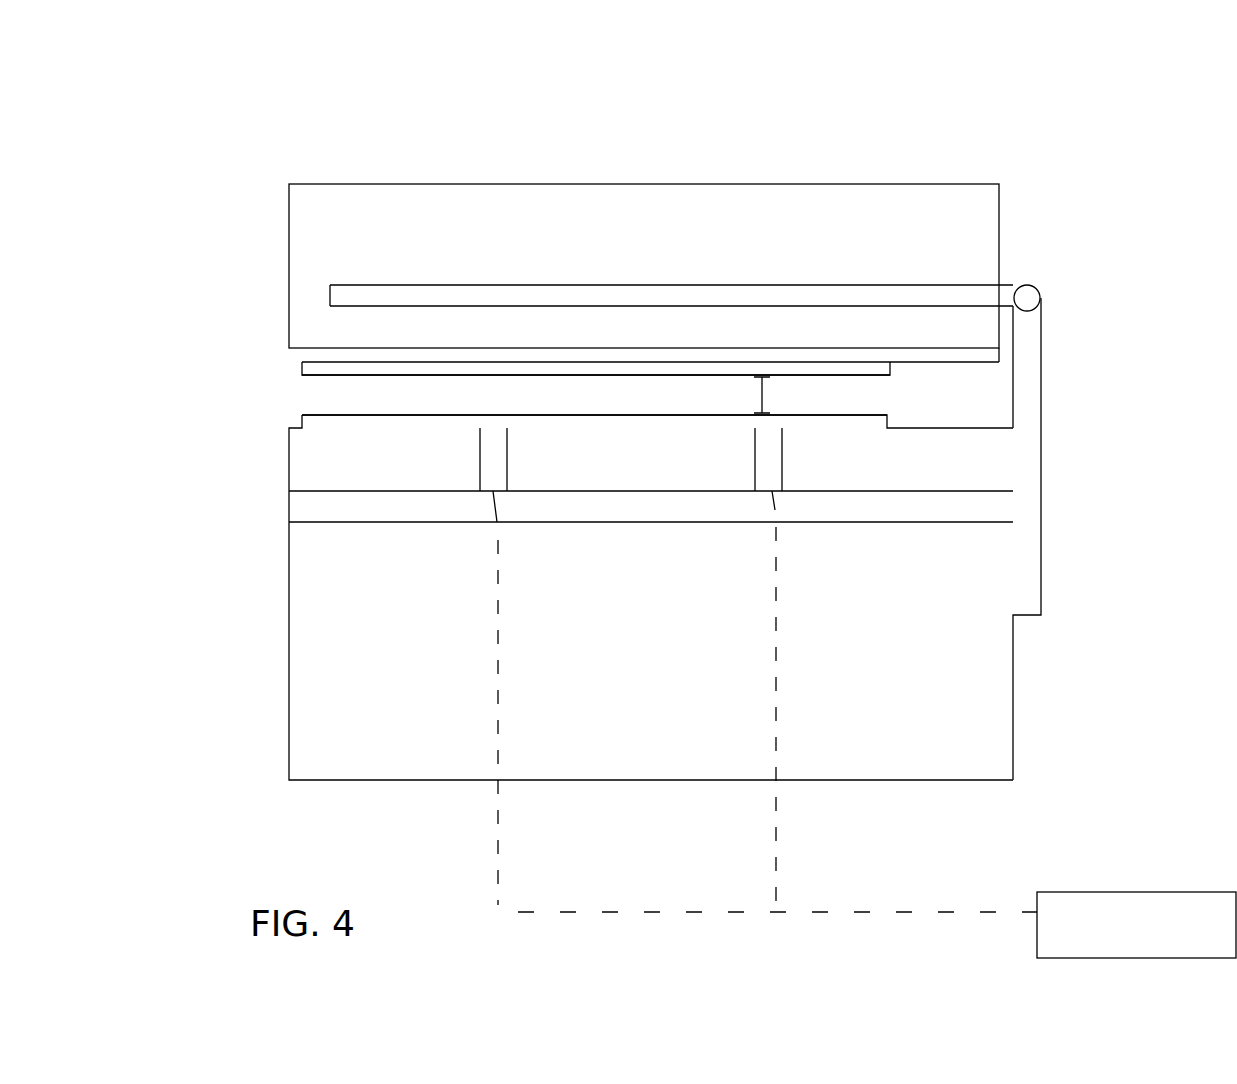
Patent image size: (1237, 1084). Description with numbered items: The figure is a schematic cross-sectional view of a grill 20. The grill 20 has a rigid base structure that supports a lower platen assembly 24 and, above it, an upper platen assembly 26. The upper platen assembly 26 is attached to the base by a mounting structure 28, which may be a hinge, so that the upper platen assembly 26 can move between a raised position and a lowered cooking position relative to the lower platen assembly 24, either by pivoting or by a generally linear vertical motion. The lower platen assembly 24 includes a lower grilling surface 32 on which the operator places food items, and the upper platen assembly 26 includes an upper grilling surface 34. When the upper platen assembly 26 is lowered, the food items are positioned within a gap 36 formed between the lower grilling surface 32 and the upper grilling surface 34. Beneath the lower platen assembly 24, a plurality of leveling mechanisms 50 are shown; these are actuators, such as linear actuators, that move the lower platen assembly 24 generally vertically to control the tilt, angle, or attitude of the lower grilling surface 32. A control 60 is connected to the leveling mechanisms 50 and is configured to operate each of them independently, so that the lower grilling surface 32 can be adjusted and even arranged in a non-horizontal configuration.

The grill 20 is at (1092, 117).
The lower platen assembly 24 is at (308, 423).
The upper platen assembly 26 is at (289, 362).
The mounting structure 28 is at (1030, 332).
The lower grilling surface 32 is at (870, 414).
The upper grilling surface 34 is at (870, 376).
The gap 36 is at (777, 395).
The leveling mechanisms 50 is at (500, 465).
The control 60 is at (1145, 892).